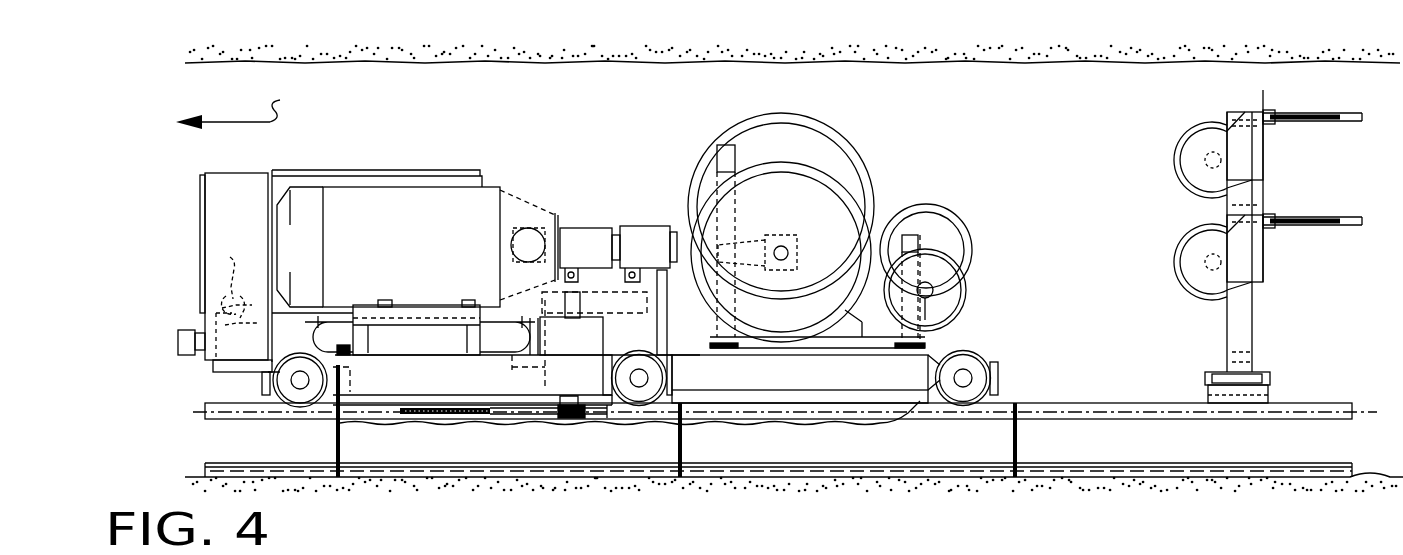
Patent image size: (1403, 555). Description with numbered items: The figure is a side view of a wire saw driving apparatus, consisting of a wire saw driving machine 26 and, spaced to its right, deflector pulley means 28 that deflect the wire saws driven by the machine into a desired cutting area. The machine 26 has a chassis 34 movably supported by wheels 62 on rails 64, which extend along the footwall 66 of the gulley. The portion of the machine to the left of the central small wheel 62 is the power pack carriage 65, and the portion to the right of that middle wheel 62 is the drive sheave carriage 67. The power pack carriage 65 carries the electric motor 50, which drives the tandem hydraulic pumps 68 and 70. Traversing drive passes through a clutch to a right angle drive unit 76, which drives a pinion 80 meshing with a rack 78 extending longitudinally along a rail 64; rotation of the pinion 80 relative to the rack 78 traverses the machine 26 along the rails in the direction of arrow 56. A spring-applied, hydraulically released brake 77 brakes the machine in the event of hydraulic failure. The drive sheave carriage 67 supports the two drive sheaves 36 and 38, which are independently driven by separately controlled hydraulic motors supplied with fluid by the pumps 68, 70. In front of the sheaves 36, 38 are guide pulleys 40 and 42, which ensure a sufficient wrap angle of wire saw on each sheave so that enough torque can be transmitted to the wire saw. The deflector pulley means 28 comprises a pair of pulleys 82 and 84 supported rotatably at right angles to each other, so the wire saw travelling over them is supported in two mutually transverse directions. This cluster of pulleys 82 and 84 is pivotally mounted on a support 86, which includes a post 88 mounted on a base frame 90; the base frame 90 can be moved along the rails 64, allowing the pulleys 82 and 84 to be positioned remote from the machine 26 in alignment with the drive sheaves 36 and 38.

The wire saw driving machine 26 is at (504, 180).
The deflector pulley means 28 is at (1158, 201).
The chassis 34 is at (409, 387).
The drive sheave 36 is at (820, 162).
The drive sheave 38 is at (794, 220).
The guide pulley 40 is at (937, 241).
The guide pulley 42 is at (948, 294).
The electric motor 50 is at (406, 236).
The arrow 56 is at (242, 111).
The wheels 62 is at (304, 406).
The rails 64 is at (226, 412).
The power pack carriage 65 is at (192, 240).
The footwall 66 is at (642, 488).
The drive sheave carriage 67 is at (789, 387).
The hydraulic pump 68 is at (595, 240).
The hydraulic pump 70 is at (655, 240).
The right angle drive unit 76 is at (584, 339).
The spring-applied, hydraulically released brake 77 is at (635, 303).
The rack 78 is at (516, 417).
The pinion 80 is at (571, 417).
The pulley 82 is at (1196, 142).
The pulley 84 is at (1339, 112).
The support 86 is at (1289, 336).
The post 88 is at (1234, 318).
The base frame 90 is at (1271, 382).